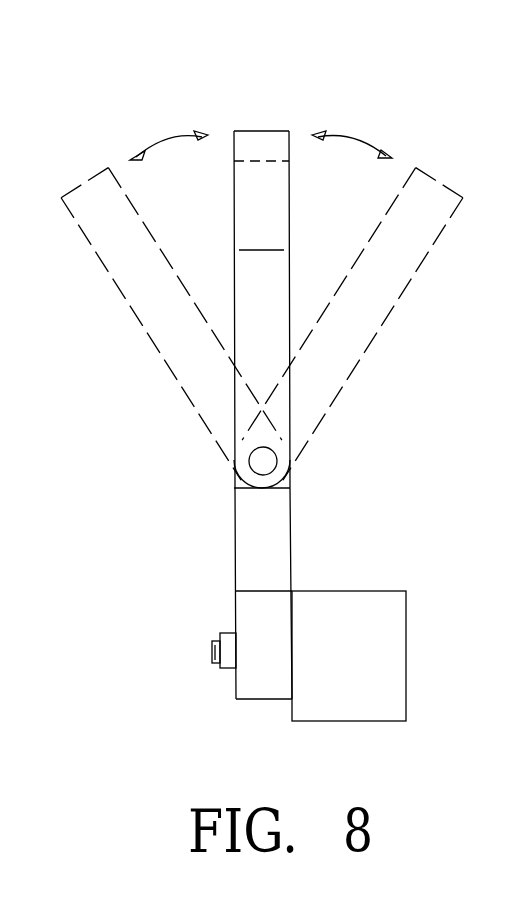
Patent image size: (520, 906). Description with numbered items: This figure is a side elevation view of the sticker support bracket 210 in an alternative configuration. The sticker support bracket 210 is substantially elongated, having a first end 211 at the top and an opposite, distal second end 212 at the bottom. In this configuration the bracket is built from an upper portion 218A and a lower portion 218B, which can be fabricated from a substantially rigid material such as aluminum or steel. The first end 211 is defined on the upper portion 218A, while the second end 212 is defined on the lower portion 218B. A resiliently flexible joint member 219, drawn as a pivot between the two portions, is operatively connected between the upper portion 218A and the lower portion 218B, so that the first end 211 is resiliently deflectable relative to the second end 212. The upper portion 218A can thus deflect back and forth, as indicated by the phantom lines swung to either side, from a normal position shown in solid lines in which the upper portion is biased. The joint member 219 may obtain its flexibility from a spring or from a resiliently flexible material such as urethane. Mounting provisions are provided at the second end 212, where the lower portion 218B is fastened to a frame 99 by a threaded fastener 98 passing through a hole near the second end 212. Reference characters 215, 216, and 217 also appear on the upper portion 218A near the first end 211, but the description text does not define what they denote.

The sticker support bracket 210 is at (383, 497).
The first end 211 is at (243, 203).
The second end 212 is at (236, 684).
The cut line 215 is at (260, 161).
The arm marking 216 is at (262, 238).
The arm tip 217 is at (247, 131).
The upper portion 218A is at (290, 237).
The lower portion 218B is at (248, 549).
The joint member 219 is at (249, 462).
The threaded fastener 98 is at (212, 654).
The frame 99 is at (357, 602).